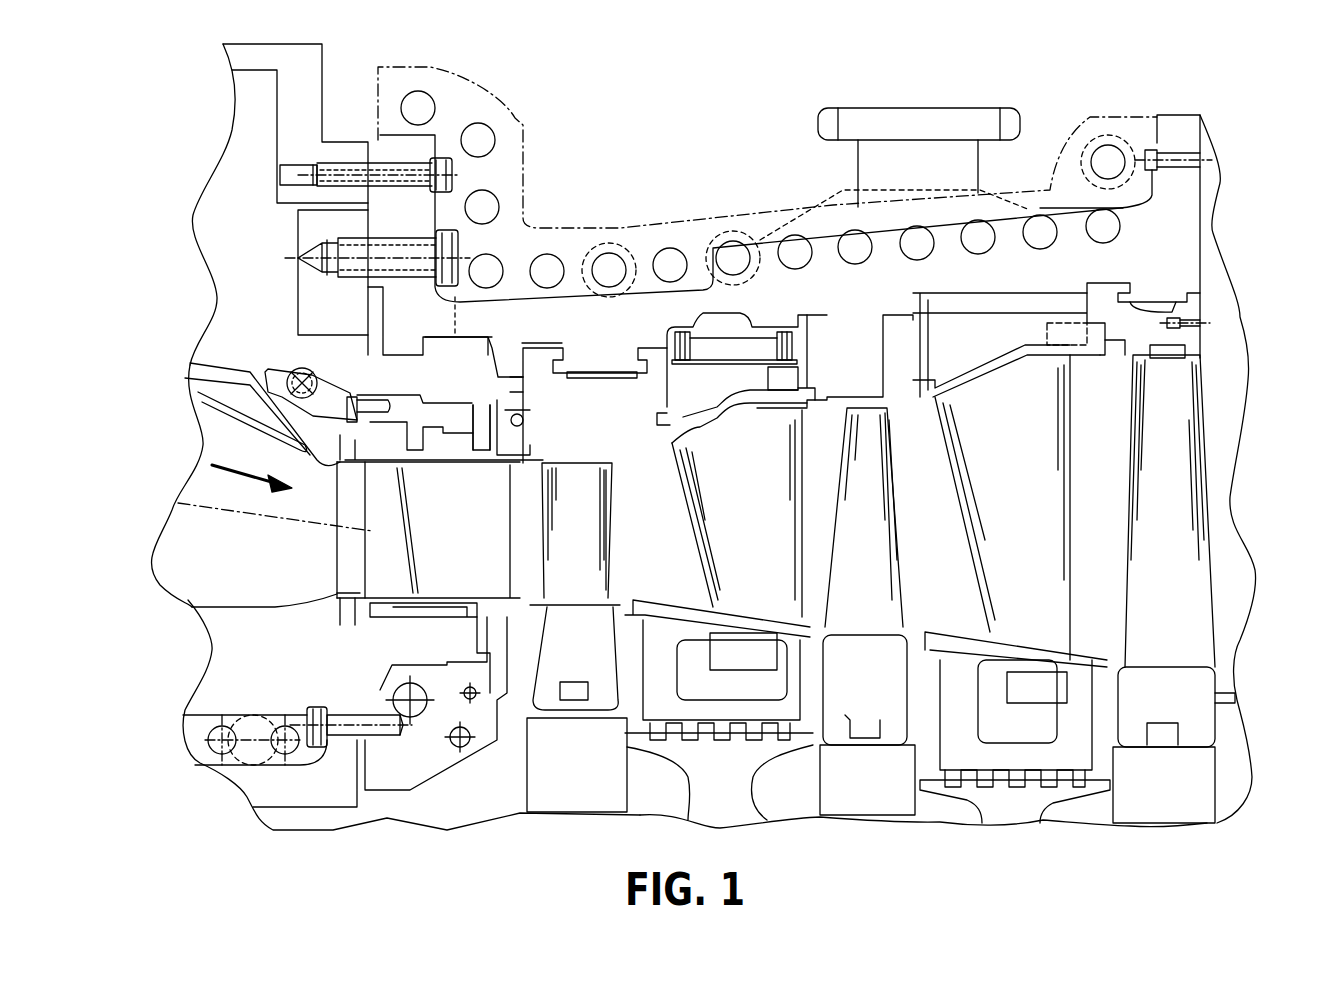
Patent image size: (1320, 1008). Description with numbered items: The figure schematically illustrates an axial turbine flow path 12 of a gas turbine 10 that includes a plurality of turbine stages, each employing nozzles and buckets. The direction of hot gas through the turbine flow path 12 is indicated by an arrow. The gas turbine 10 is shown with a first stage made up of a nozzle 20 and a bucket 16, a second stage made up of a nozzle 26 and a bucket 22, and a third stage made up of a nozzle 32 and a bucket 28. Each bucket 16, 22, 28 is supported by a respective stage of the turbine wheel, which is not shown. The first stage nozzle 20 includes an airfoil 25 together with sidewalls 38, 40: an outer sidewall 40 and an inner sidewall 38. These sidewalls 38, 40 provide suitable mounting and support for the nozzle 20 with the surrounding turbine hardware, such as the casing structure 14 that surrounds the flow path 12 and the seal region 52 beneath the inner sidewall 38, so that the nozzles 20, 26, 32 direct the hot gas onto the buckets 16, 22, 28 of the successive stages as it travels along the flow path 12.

The gas turbine 10 is at (604, 152).
The axial turbine flow path 12 is at (203, 446).
The turbine casing 14 is at (643, 467).
The bucket 16 is at (598, 497).
The first stage nozzle 20 is at (446, 502).
The bucket 22 is at (880, 510).
The airfoil 25 is at (440, 533).
The nozzle 26 is at (762, 487).
The bucket 28 is at (1193, 507).
The nozzle 32 is at (1032, 485).
The inner sidewall 38 is at (440, 597).
The outer sidewall 40 is at (467, 462).
The seal 52 is at (482, 623).